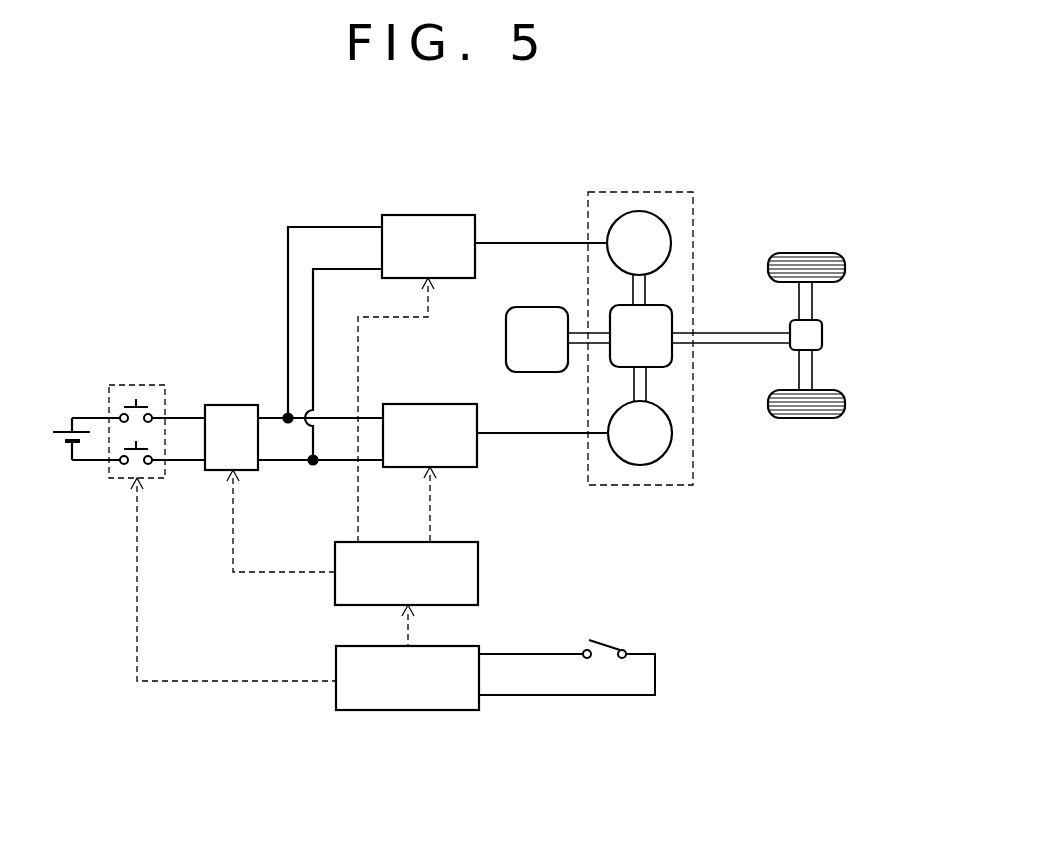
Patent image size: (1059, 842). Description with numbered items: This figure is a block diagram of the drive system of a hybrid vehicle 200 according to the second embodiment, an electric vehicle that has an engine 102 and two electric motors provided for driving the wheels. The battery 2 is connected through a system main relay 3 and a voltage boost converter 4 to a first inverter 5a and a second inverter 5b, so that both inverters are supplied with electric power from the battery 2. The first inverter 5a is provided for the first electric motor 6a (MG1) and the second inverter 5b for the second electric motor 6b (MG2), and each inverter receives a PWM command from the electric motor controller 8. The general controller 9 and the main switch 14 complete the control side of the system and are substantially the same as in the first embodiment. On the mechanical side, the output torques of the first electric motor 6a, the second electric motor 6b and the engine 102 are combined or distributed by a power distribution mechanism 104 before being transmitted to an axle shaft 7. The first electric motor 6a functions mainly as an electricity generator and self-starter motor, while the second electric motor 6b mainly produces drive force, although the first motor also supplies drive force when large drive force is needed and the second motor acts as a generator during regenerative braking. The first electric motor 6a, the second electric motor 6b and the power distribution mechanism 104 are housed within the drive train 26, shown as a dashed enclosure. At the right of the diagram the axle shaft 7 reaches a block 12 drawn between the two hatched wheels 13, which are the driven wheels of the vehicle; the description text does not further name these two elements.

The hybrid vehicle 200 is at (151, 184).
The battery 2 is at (63, 428).
The system main relay 3 is at (152, 385).
The voltage boost converter 4 is at (243, 405).
The first inverter 5a is at (445, 213).
The second inverter 5b is at (447, 404).
The first electric motor 6a is at (671, 243).
The second electric motor 6b is at (672, 433).
The axle shaft 7 is at (713, 348).
The electric motor controller 8 is at (478, 570).
The general controller 9 is at (408, 710).
The differential gear 12 is at (822, 332).
The drive wheels 13 is at (800, 253).
The main switch 14 is at (619, 637).
The drive train 26 is at (648, 192).
The engine 102 is at (541, 307).
The power distribution mechanism 104 is at (672, 318).